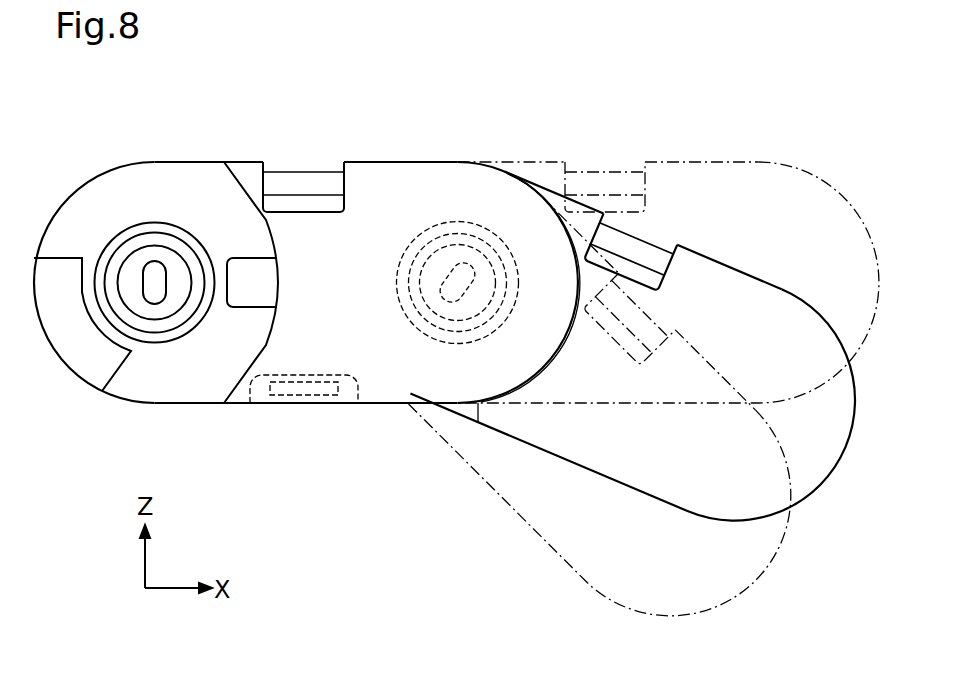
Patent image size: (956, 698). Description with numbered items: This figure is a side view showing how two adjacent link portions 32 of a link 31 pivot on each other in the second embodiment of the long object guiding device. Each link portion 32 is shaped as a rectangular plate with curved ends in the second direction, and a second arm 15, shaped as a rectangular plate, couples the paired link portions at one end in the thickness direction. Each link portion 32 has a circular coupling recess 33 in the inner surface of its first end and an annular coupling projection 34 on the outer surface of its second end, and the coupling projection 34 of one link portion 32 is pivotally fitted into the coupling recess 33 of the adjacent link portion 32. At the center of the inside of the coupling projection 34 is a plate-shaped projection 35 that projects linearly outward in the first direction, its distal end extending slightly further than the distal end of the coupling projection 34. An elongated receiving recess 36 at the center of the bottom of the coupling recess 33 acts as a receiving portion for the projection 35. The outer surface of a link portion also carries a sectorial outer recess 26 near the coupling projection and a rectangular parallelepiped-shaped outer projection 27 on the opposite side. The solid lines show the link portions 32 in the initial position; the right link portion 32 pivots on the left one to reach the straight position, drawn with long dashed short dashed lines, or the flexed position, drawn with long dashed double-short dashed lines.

The second arm 15 is at (258, 404).
The outer recess 26 is at (66, 343).
The outer projection 27 is at (272, 290).
The link 31 is at (129, 151).
The link portion 32 is at (176, 162).
The coupling recess 33 is at (456, 236).
The coupling projection 34 is at (183, 323).
The projection 35 is at (157, 270).
The receiving recess 36 is at (442, 262).